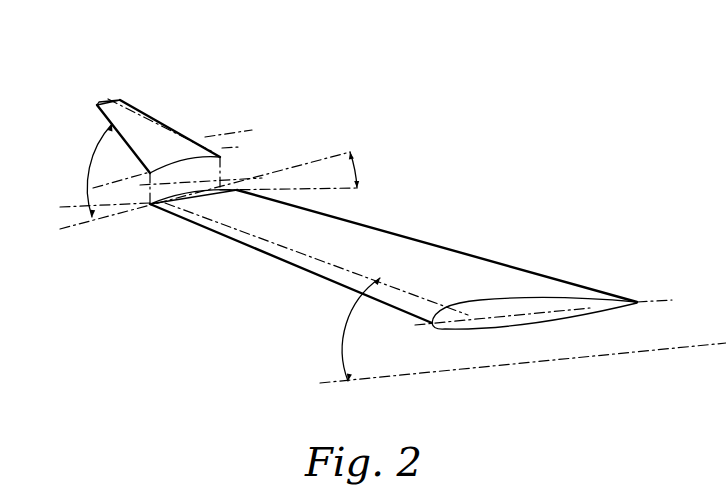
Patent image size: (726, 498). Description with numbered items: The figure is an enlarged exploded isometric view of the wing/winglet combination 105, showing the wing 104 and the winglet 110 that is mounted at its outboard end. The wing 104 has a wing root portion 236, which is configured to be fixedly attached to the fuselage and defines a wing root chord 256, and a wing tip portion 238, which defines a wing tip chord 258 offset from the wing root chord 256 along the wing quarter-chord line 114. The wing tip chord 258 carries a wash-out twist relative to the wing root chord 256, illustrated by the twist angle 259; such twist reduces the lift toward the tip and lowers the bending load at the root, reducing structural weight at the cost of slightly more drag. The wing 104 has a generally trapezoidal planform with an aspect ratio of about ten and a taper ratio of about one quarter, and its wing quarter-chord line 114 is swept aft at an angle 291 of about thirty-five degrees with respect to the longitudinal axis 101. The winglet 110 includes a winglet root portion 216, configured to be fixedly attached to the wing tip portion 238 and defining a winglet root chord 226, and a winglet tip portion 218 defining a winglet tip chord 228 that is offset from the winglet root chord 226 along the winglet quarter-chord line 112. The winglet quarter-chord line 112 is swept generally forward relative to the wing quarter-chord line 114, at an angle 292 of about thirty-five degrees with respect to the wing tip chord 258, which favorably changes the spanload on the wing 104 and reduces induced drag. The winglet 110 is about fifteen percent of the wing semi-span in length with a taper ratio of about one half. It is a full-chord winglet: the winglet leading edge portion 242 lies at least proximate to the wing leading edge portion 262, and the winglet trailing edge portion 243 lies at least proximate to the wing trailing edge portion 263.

The longitudinal axis 101 is at (530, 364).
The wing 104 is at (453, 249).
The wing/winglet combination 105 is at (364, 103).
The winglet 110 is at (127, 96).
The winglet quarter-chord line 112 is at (148, 115).
The wing quarter-chord line 114 is at (205, 225).
The winglet root portion 216 is at (238, 142).
The winglet tip portion 218 is at (148, 88).
The winglet root chord 226 is at (228, 136).
The winglet tip chord 228 is at (110, 92).
The wing root portion 236 is at (381, 323).
The wing tip portion 238 is at (144, 222).
The winglet leading edge portion 242 is at (100, 125).
The winglet trailing edge portion 243 is at (188, 138).
The wing root chord 256 is at (458, 330).
The wing tip chord 258 is at (103, 183).
The twist angle 259 is at (358, 173).
The wing leading edge portion 262 is at (273, 260).
The wing trailing edge portion 263 is at (523, 269).
The angle 291 is at (343, 350).
The angle 292 is at (90, 170).